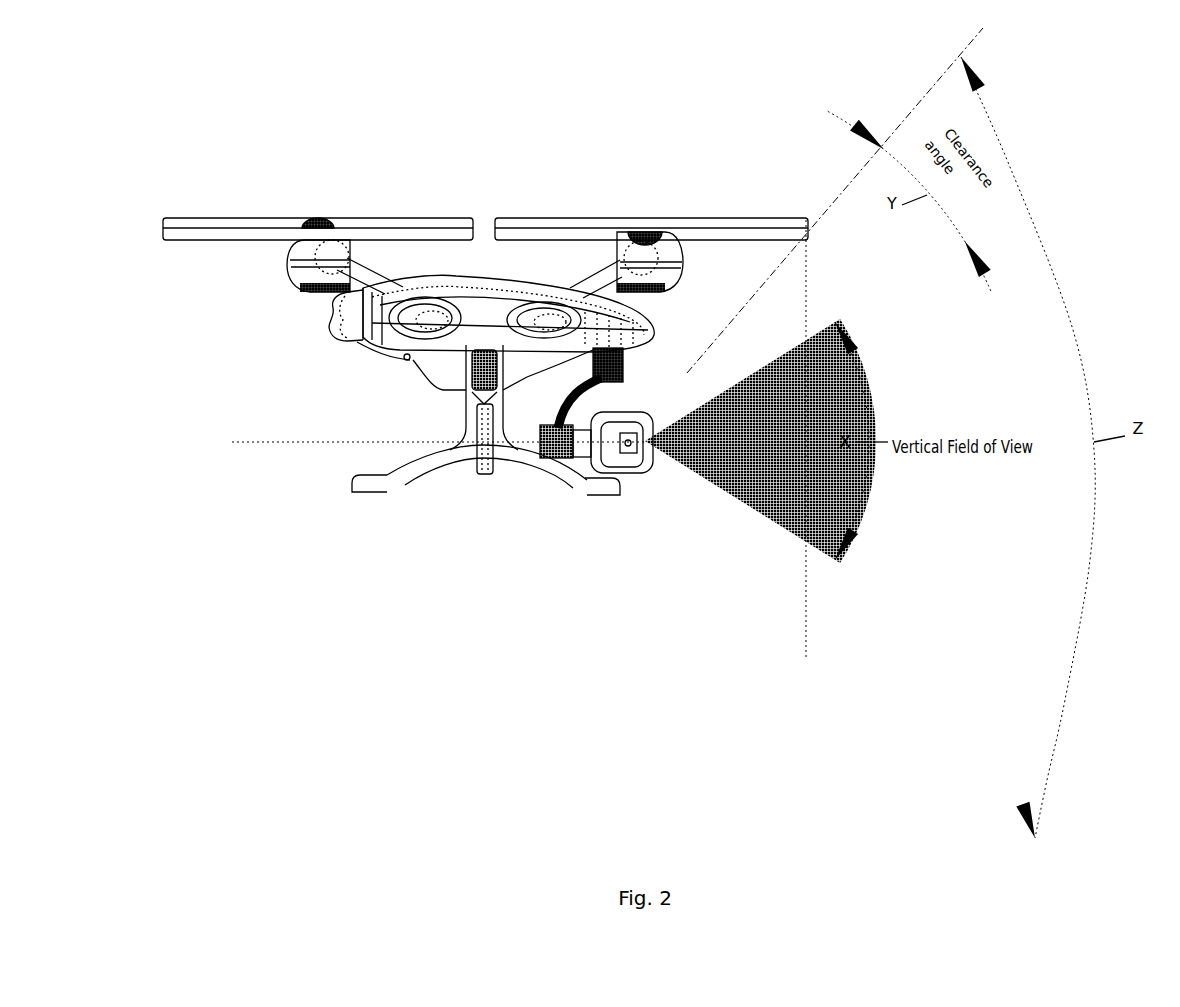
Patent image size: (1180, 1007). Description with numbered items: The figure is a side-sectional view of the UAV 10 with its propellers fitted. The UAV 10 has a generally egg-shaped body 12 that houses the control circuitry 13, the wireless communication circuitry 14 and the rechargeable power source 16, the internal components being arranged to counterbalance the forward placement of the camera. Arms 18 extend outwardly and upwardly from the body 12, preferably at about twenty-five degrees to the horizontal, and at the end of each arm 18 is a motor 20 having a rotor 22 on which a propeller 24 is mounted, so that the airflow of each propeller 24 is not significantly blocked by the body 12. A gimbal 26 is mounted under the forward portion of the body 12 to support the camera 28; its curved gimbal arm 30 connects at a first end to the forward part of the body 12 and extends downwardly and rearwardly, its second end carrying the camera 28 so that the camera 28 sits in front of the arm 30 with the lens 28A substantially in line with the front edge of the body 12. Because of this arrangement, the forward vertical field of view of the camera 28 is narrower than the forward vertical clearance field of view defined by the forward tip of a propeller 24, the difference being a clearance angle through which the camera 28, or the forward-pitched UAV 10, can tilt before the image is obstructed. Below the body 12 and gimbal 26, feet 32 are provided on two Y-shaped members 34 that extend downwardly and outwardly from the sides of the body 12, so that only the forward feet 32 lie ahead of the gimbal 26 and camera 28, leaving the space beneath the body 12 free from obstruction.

The UAV 10 is at (552, 128).
The body 12 is at (430, 370).
The control circuitry 13 is at (406, 360).
The wireless communication circuitry 14 is at (397, 347).
The rechargeable power source 16 is at (343, 327).
The arms 18 is at (372, 276).
The motor 20 is at (300, 272).
The rotor 22 is at (320, 213).
The propeller 24 is at (215, 223).
The gimbal 26 is at (632, 380).
The camera 28 is at (637, 421).
The lens 28A is at (647, 442).
The gimbal arm 30 is at (570, 398).
The feet 32 is at (373, 493).
The Y-shaped members 34 is at (462, 455).